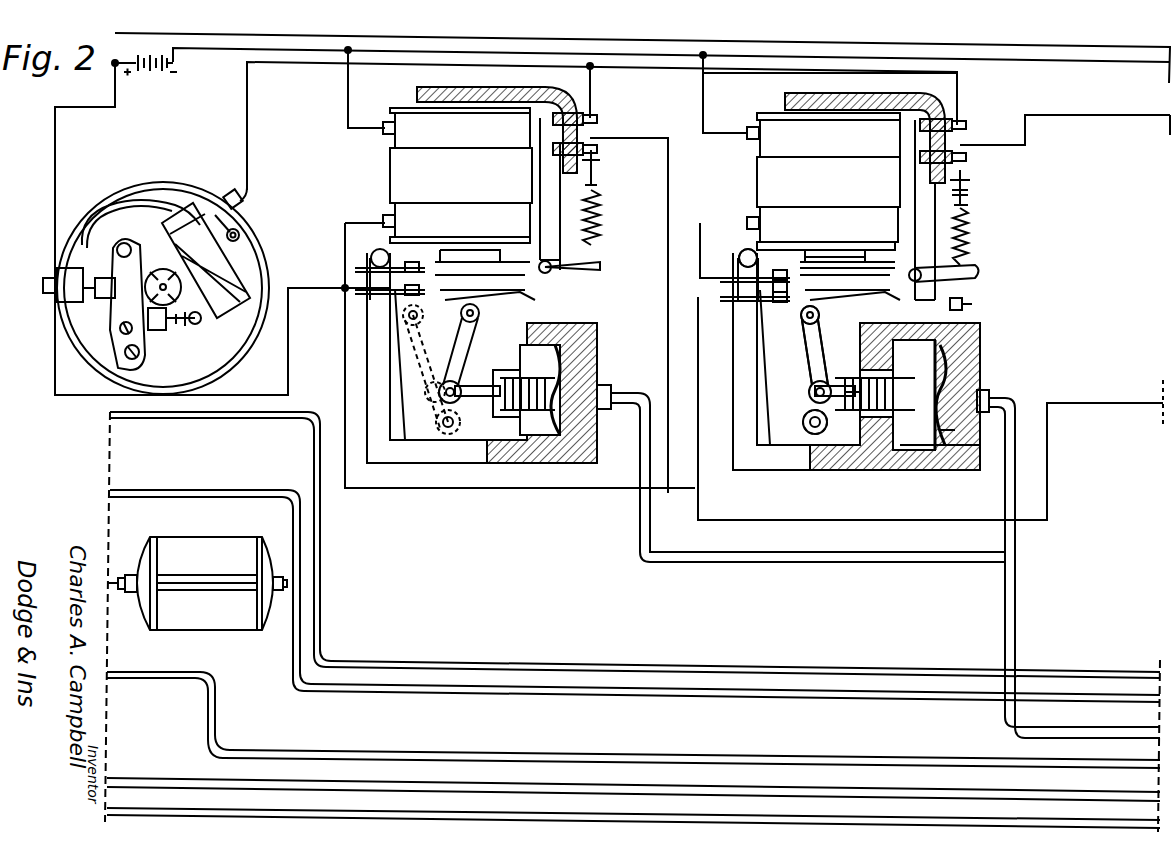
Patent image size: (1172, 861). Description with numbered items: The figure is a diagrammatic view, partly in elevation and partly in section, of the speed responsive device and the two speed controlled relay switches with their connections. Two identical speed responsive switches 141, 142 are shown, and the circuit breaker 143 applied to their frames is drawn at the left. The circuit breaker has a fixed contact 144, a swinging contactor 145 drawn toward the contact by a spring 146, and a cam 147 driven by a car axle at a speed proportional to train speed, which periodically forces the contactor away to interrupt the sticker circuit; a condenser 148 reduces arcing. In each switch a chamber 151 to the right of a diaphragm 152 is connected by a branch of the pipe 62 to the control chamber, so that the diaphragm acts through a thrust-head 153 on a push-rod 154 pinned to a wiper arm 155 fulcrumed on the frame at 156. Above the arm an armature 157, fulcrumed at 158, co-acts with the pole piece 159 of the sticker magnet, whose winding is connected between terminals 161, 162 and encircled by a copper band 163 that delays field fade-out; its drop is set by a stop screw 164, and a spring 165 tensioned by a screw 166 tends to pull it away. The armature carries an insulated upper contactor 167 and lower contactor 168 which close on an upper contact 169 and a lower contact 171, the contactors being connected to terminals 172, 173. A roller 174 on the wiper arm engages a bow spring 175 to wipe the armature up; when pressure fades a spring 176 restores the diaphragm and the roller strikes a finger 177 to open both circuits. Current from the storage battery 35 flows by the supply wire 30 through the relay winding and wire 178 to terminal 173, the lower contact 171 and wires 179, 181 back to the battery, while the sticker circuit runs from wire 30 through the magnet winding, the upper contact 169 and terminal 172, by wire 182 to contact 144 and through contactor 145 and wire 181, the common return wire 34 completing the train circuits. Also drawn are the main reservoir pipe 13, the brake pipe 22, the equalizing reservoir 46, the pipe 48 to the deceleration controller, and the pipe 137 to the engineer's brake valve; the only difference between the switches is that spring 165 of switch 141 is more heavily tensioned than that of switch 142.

The main reservoir pipe 13 is at (131, 680).
The brake pipe 22 is at (181, 782).
The supply wire 30 is at (271, 74).
The common return wire 34 is at (202, 36).
The storage battery 35 is at (148, 84).
The equalizing reservoir 46 is at (170, 552).
The pipe 48 is at (210, 499).
The pipe 62 is at (1015, 590).
The pipe 137 is at (147, 418).
The speed responsive switch 141 is at (755, 460).
The speed responsive switch 142 is at (401, 465).
The circuit breaker 143 is at (151, 186).
The fixed contact 144 is at (153, 330).
The swinging contactor 145 is at (130, 298).
The spring 146 is at (100, 245).
The cam 147 is at (161, 282).
The condenser 148 is at (237, 278).
The chamber 151 is at (957, 360).
The diaphragm 152 is at (948, 437).
The thrust-head 153 is at (965, 378).
The push-rod 154 is at (845, 460).
The wiper arm 155 is at (828, 338).
The fulcrum 156 is at (812, 440).
The armature 157 is at (798, 278).
The fulcrum 158 is at (962, 272).
The pole piece 159 is at (836, 256).
The terminal 161 is at (752, 132).
The terminal 162 is at (749, 222).
The copper band 163 is at (757, 168).
The stop screw 164 is at (982, 303).
The spring 165 is at (970, 232).
The screw 166 is at (972, 190).
The upper contactor 167 is at (790, 275).
The lower contactor 168 is at (789, 305).
The upper contact 169 is at (725, 272).
The lower contact 171 is at (722, 302).
The terminal 172 is at (960, 125).
The terminal 173 is at (965, 158).
The roller 174 is at (801, 352).
The bow spring 175 is at (803, 326).
The spring 176 is at (913, 465).
The finger 177 is at (842, 318).
The wire 178 is at (1026, 112).
The wire 179 is at (520, 494).
The wire 181 is at (55, 153).
The wire 182 is at (248, 138).